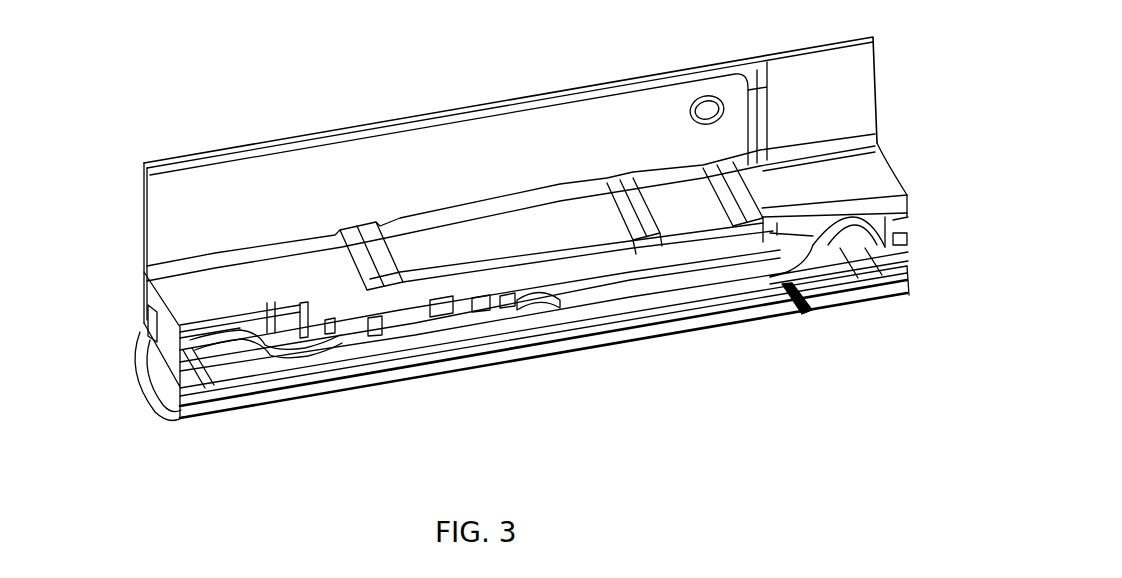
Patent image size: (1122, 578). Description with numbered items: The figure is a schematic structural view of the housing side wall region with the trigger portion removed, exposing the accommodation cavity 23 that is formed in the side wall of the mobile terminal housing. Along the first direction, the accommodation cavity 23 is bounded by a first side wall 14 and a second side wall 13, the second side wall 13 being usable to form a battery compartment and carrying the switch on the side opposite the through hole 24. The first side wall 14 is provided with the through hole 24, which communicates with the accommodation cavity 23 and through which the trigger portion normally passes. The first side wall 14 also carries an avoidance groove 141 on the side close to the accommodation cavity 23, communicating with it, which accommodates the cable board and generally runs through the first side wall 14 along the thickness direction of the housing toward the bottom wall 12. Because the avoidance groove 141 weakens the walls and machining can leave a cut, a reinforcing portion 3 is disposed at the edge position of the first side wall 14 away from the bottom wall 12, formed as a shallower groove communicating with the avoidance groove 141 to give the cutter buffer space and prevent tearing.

The reinforcing portion 3 is at (788, 290).
The bottom wall 12 is at (147, 320).
The second side wall 13 is at (222, 301).
The first side wall 14 is at (253, 403).
The avoidance groove 141 is at (633, 287).
The accommodation cavity 23 is at (182, 369).
The through hole 24 is at (500, 305).